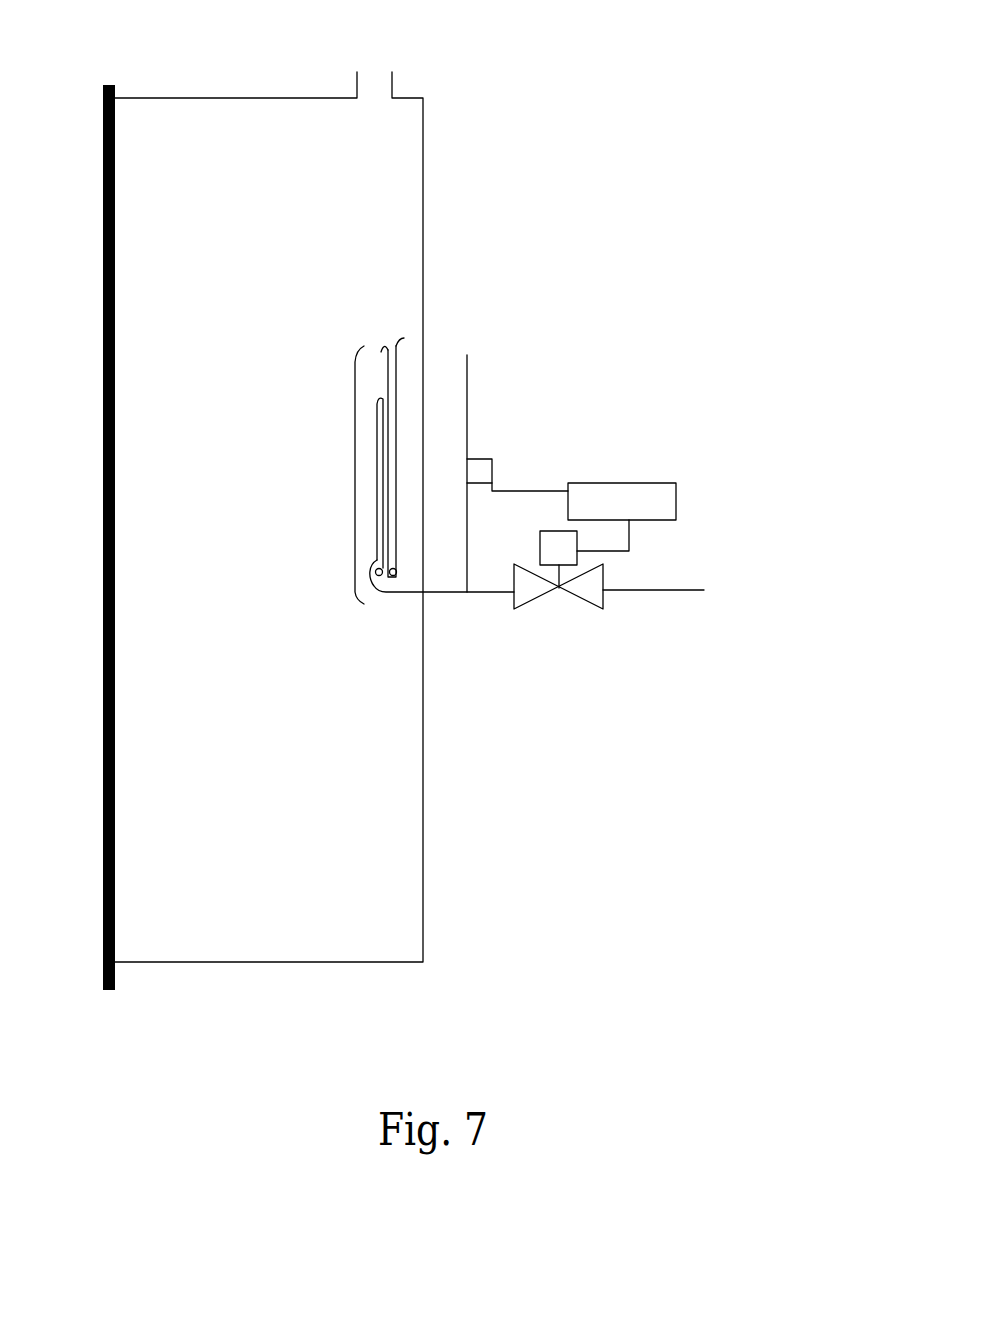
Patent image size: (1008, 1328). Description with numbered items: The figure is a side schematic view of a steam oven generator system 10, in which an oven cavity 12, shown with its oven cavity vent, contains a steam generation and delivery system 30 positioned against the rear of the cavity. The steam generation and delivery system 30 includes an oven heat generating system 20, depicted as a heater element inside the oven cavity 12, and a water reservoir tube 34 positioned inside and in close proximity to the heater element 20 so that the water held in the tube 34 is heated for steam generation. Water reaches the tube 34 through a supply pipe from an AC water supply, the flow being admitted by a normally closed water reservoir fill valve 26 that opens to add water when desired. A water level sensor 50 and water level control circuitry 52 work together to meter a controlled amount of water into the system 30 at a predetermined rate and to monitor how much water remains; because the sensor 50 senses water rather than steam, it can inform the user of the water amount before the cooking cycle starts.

The steam oven generator system 10 is at (607, 98).
The oven cavity 12 is at (258, 297).
The oven heat generating system 20 is at (395, 380).
The water reservoir fill valve 26 is at (558, 600).
The steam generation and delivery system 30 is at (355, 480).
The water reservoir tube 34 is at (372, 568).
The water level sensor 50 is at (492, 460).
The water level control circuitry 52 is at (655, 505).